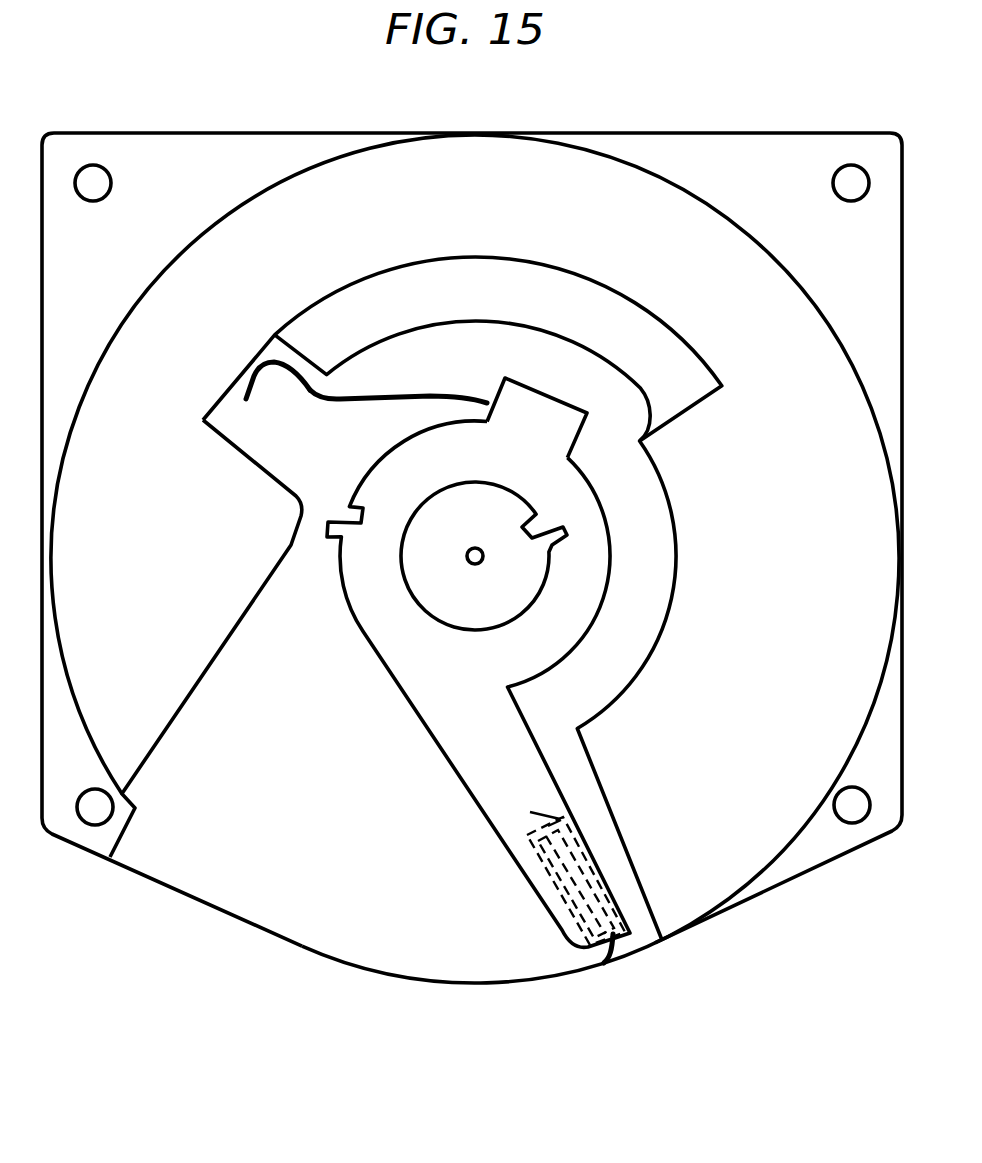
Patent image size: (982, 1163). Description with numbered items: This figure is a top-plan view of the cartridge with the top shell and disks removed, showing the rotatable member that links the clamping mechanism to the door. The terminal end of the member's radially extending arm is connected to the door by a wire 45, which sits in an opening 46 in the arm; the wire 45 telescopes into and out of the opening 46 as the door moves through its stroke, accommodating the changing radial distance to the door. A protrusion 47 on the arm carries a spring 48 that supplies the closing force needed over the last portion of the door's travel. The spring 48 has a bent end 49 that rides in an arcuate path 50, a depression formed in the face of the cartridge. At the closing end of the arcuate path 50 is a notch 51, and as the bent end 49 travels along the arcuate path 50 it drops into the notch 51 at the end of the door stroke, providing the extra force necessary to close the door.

The wire 45 is at (617, 958).
The opening 46 is at (552, 822).
The protrusion 47 is at (585, 432).
The spring 48 is at (317, 401).
The bent end 49 is at (242, 376).
The arcuate path 50 is at (488, 346).
The notch 51 is at (222, 418).